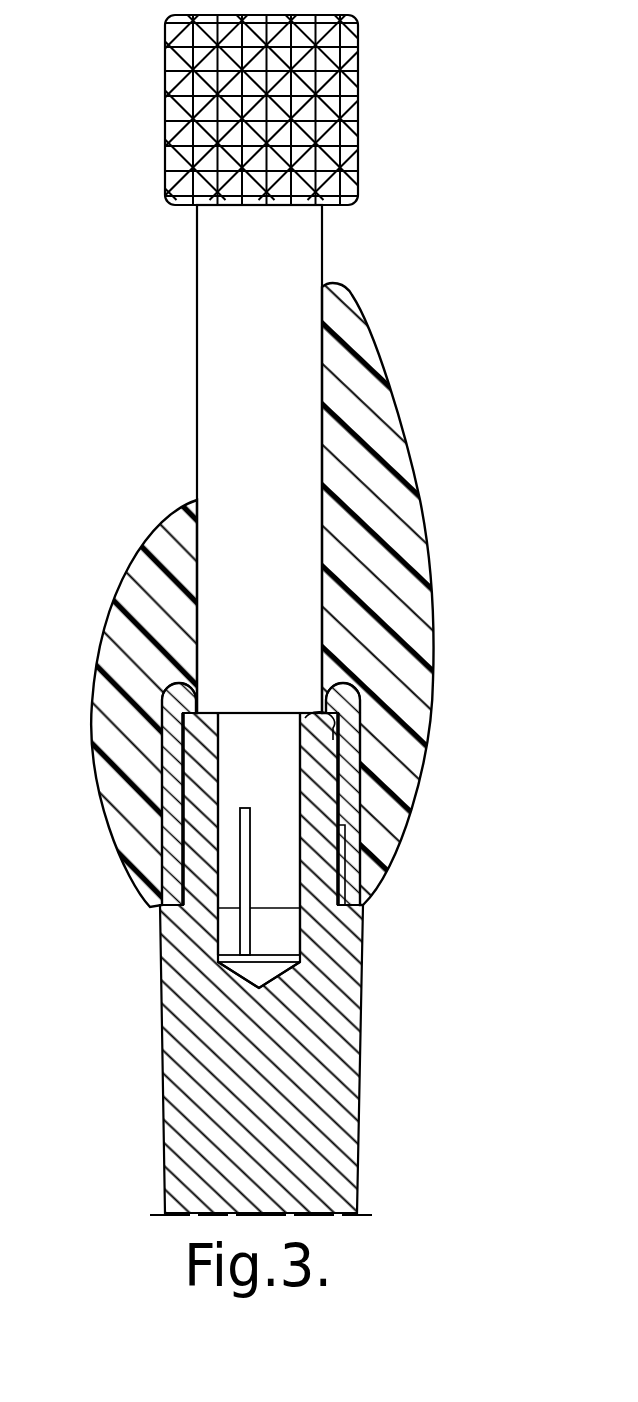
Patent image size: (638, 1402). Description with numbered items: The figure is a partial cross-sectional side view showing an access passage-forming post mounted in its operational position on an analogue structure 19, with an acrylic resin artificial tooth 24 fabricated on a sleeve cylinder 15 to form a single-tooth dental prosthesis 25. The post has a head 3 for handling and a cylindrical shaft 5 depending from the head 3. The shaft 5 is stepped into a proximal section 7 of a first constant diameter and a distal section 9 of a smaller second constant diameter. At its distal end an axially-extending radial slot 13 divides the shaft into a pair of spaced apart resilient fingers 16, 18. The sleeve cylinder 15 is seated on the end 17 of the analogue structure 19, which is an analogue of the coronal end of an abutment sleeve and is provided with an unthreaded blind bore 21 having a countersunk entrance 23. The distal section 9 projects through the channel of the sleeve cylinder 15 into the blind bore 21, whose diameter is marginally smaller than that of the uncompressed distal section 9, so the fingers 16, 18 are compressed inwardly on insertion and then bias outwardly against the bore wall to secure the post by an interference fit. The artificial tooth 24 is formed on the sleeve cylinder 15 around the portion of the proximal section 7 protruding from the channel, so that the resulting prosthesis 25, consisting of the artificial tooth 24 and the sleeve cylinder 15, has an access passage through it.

The head 3 is at (163, 88).
The cylindrical shaft 5 is at (213, 325).
The proximal section 7 is at (222, 420).
The distal section 9 is at (233, 748).
The axially-extending radial slot 13 is at (243, 892).
The sleeve cylinder 15 is at (400, 800).
The resilient finger 16 is at (227, 940).
The end of analogue structure 17 is at (165, 830).
The resilient finger 18 is at (297, 918).
The analogue structure 19 is at (365, 1072).
The unthreaded blind bore 21 is at (303, 943).
The countersunk entrance 23 is at (360, 740).
The artificial tooth 24 is at (418, 485).
The single-tooth dental prosthesis 25 is at (440, 230).